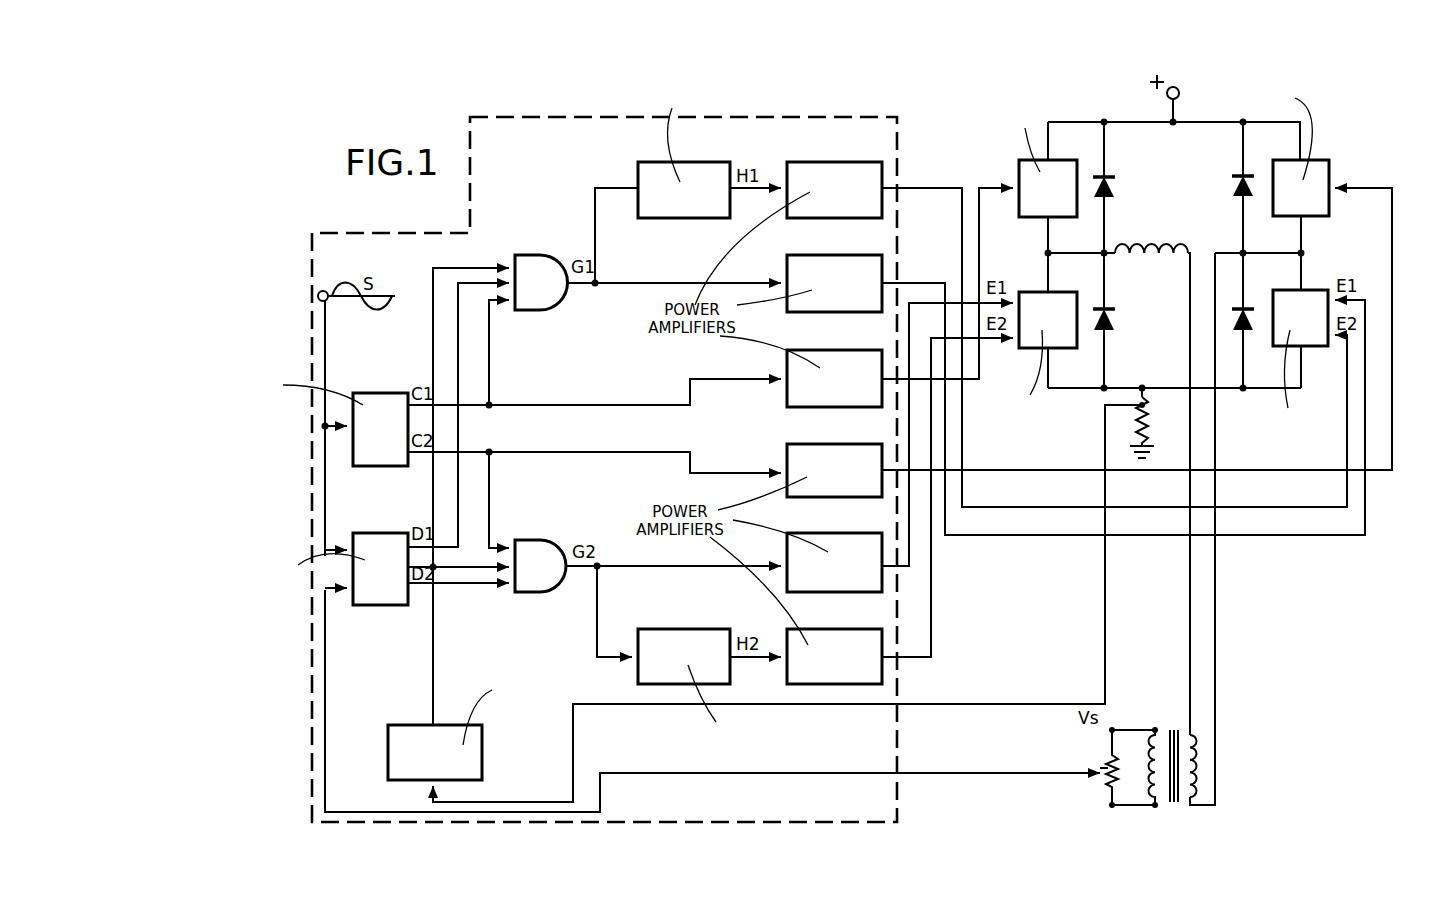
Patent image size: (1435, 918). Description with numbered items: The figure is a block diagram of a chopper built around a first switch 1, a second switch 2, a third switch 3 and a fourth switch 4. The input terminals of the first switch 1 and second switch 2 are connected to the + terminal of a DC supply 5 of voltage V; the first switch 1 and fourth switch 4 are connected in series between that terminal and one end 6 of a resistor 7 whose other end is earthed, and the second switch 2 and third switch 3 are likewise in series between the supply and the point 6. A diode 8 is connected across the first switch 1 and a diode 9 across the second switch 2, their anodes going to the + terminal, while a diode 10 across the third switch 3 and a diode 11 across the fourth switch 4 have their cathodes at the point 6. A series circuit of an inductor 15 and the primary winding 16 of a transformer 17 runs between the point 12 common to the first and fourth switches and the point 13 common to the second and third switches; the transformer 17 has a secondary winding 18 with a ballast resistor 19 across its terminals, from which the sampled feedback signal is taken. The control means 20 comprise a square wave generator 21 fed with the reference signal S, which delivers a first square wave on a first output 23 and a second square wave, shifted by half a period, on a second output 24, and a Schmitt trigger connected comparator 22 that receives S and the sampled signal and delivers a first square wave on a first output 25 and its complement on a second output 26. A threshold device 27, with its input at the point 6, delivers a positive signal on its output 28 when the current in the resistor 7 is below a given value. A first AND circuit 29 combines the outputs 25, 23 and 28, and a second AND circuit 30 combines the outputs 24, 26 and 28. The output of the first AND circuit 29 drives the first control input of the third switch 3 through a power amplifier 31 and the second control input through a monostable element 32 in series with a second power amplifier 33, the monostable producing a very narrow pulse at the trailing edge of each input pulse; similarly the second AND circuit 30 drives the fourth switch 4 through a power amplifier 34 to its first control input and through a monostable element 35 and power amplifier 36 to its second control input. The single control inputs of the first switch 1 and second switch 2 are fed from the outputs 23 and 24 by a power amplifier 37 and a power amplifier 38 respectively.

The first switch 1 is at (1030, 172).
The second switch 2 is at (1322, 172).
The third switch 3 is at (1310, 325).
The fourth switch 4 is at (1040, 320).
The DC supply 5 is at (1167, 92).
The end of resistor 6 is at (1143, 386).
The resistor 7 is at (1150, 428).
The diode 8 is at (1110, 188).
The diode 9 is at (1240, 190).
The diode 10 is at (1255, 320).
The diode 11 is at (1115, 322).
The point common to the switches 1 and 4 12 is at (1045, 253).
The point common to the switches 2 and 3 13 is at (1305, 253).
The inductor 15 is at (1152, 246).
The primary winding 16 is at (1186, 735).
The transformer 17 is at (1165, 730).
The secondary winding 18 is at (1129, 767).
The ballast resistor 19 is at (1105, 760).
The control means 20 is at (392, 245).
The square wave generator 21 is at (304, 413).
The Schmitt trigger connected comparator 22 is at (297, 545).
The first output 23 is at (382, 414).
The second output 24 is at (382, 452).
The first output 25 is at (382, 552).
The second output 26 is at (382, 590).
The threshold device 27 is at (392, 757).
The output of threshold device 28 is at (440, 722).
The first AND circuit 29 is at (538, 268).
The second AND circuit 30 is at (540, 557).
The power amplifier 31 is at (797, 272).
The monostable element 32 is at (660, 176).
The second power amplifier 33 is at (812, 172).
The power amplifier 34 is at (805, 560).
The monostable element 35 is at (707, 636).
The power amplifier 36 is at (845, 636).
The power amplifier 37 is at (820, 368).
The power amplifier 38 is at (825, 462).